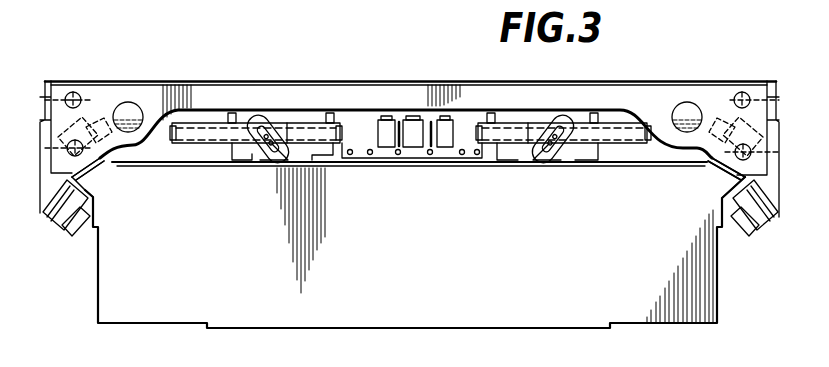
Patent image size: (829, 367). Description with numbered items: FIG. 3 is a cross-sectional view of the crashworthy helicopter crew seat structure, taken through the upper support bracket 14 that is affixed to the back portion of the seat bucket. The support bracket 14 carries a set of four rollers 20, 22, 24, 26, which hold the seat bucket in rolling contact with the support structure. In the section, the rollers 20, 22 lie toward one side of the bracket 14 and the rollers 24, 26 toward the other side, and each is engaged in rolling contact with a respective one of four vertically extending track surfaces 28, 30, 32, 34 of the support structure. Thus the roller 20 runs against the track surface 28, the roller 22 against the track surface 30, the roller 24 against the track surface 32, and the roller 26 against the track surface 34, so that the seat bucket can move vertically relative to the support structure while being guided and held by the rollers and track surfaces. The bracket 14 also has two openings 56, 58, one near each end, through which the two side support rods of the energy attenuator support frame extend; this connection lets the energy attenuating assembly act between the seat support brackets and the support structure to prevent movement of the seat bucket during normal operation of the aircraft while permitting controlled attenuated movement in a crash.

The support bracket 14 is at (363, 95).
The roller 20 is at (60, 233).
The roller 22 is at (94, 117).
The roller 24 is at (733, 113).
The roller 26 is at (750, 222).
The track surface 28 is at (88, 187).
The track surface 30 is at (97, 163).
The track surface 32 is at (717, 163).
The track surface 34 is at (723, 190).
The opening 56 is at (137, 108).
The opening 58 is at (689, 105).